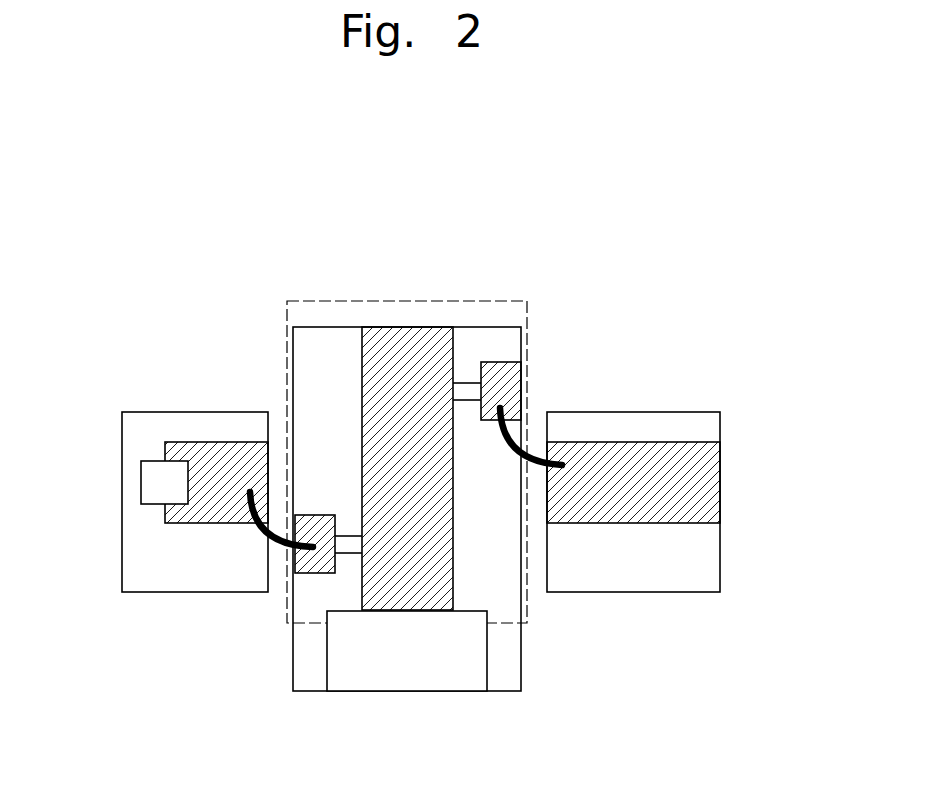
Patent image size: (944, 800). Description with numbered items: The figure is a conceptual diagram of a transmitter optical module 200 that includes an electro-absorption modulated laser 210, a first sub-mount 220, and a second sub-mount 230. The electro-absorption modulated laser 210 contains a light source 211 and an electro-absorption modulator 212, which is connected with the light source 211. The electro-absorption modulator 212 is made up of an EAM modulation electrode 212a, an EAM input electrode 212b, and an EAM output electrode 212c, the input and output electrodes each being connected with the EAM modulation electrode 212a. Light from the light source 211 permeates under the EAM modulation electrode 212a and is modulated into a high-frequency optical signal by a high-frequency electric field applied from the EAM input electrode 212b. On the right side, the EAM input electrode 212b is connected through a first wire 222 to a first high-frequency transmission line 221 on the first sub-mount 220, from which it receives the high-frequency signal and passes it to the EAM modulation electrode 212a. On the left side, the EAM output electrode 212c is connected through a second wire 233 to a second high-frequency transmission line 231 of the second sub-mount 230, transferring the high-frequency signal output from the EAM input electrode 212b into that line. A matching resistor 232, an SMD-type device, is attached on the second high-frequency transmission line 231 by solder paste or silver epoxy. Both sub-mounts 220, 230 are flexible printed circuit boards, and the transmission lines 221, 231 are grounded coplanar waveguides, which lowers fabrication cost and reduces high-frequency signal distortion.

The transmitter optical module 200 is at (720, 173).
The electro-absorption modulated laser 210 is at (331, 316).
The light source 211 is at (407, 693).
The electro-absorption modulator 212 is at (473, 300).
The EAM modulation electrode 212a is at (405, 340).
The EAM input electrode 212b is at (513, 385).
The EAM output electrode 212c is at (315, 575).
The first sub-mount 220 is at (684, 470).
The first high-frequency transmission line 221 is at (692, 458).
The first wire 222 is at (525, 428).
The second sub-mount 230 is at (149, 466).
The second high-frequency transmission line 231 is at (218, 457).
The matching resistor 232 is at (153, 468).
The second wire 233 is at (280, 553).